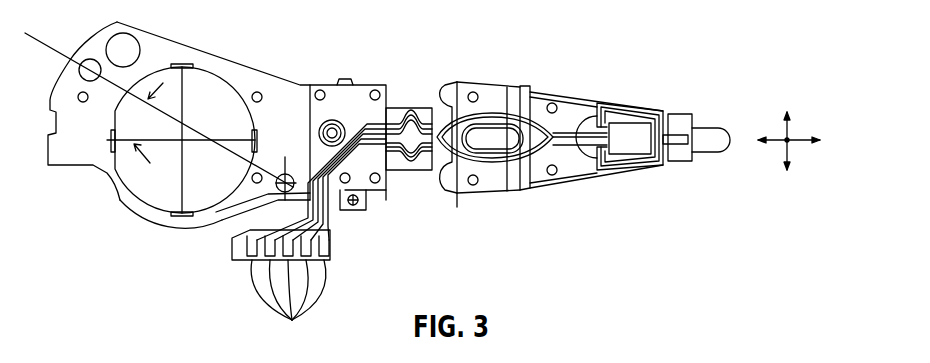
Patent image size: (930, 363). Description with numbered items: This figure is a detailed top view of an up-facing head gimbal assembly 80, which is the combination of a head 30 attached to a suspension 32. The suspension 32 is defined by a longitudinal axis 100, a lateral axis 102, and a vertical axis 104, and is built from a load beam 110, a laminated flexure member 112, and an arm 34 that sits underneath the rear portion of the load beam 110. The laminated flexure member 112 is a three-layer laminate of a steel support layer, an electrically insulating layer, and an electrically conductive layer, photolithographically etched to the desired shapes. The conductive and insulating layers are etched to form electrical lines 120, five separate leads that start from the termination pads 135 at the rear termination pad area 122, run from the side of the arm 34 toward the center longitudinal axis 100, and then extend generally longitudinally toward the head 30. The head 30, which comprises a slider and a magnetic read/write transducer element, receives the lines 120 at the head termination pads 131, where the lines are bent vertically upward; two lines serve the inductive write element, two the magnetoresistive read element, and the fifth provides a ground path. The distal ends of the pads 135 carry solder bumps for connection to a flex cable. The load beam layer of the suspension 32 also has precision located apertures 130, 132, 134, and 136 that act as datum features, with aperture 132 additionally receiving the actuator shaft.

The head 30 is at (633, 135).
The suspension 32 is at (443, 80).
The arm 34 is at (200, 47).
The head gimbal assembly 80 is at (567, 227).
The longitudinal axis 100 is at (797, 132).
The lateral axis 102 is at (786, 128).
The vertical axis 104 is at (792, 150).
The load beam 110 is at (247, 81).
The laminated flexure member 112 is at (339, 86).
The electrical lines 120 is at (397, 107).
The rear termination pad area 122 is at (343, 228).
The aperture 130 is at (490, 140).
The head termination pads 131 is at (685, 163).
The aperture 132 is at (137, 200).
The aperture 134 is at (227, 210).
The termination pads 135 is at (288, 302).
The aperture 136 is at (88, 60).